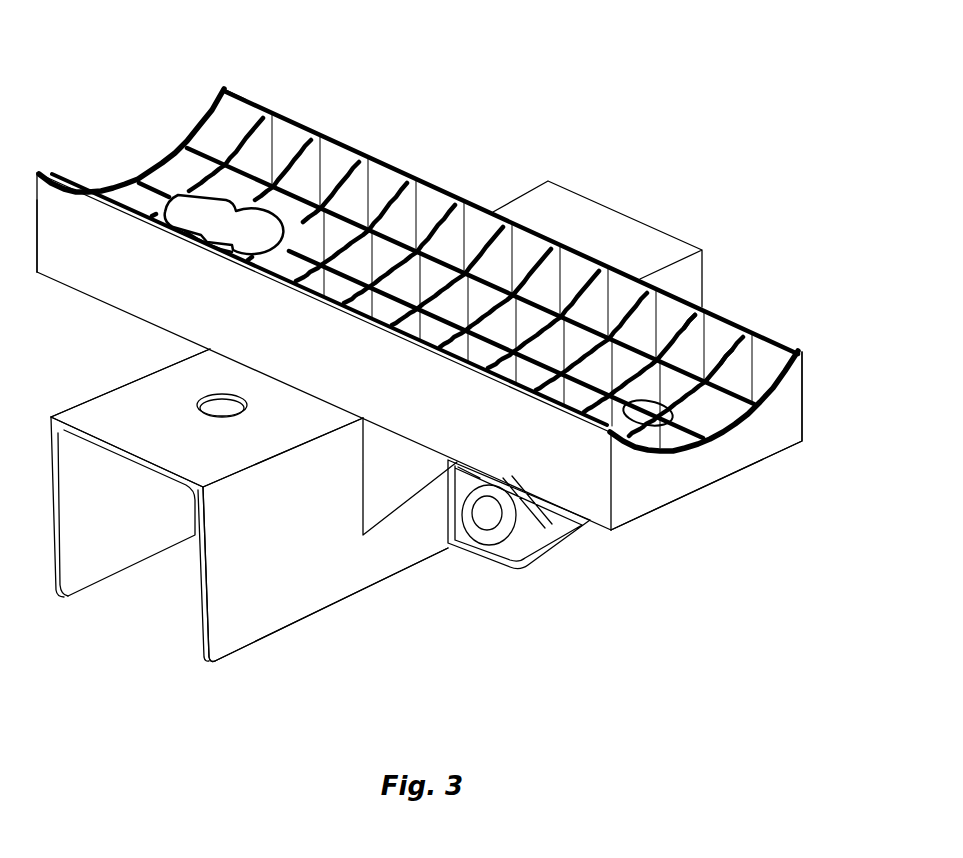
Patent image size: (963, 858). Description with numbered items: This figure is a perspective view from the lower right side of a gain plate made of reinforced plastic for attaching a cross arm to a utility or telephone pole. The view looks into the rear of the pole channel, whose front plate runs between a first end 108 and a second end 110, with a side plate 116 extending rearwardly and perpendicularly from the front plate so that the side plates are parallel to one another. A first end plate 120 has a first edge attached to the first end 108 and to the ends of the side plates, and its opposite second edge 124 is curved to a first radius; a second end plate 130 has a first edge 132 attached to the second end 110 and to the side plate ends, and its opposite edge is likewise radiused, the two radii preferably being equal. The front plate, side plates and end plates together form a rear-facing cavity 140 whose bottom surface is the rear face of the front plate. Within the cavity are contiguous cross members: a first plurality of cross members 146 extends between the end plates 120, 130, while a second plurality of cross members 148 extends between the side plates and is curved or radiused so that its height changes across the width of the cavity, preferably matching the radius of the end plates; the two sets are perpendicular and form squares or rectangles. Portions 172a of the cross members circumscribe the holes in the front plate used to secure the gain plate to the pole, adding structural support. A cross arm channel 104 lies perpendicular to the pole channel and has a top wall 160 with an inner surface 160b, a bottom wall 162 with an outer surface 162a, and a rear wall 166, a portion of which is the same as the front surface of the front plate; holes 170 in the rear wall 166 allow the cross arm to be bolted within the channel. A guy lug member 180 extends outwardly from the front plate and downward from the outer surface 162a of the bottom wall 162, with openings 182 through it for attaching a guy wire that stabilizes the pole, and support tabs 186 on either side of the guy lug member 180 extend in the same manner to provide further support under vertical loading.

The cross arm channel 104 is at (606, 210).
The first end 108 is at (30, 275).
The second end 110 is at (707, 485).
The side plate 116 is at (594, 503).
The first end plate 120 is at (200, 116).
The second edge 124 is at (219, 86).
The second end plate 130 is at (803, 416).
The first edge 132 is at (780, 378).
The rear-facing cavity 140 is at (378, 192).
The first plurality of cross members 146 is at (716, 440).
The second plurality of cross members 148 is at (731, 338).
The top wall 160 is at (50, 533).
The inner surface 160b is at (104, 558).
The bottom wall 162 is at (204, 665).
The outer surface 162a is at (350, 575).
The rear wall 166 is at (138, 425).
The holes 170 is at (211, 414).
The portions 172a is at (245, 196).
The guy lug member 180 is at (530, 528).
The openings 182 is at (486, 543).
The support tabs 186 is at (362, 478).